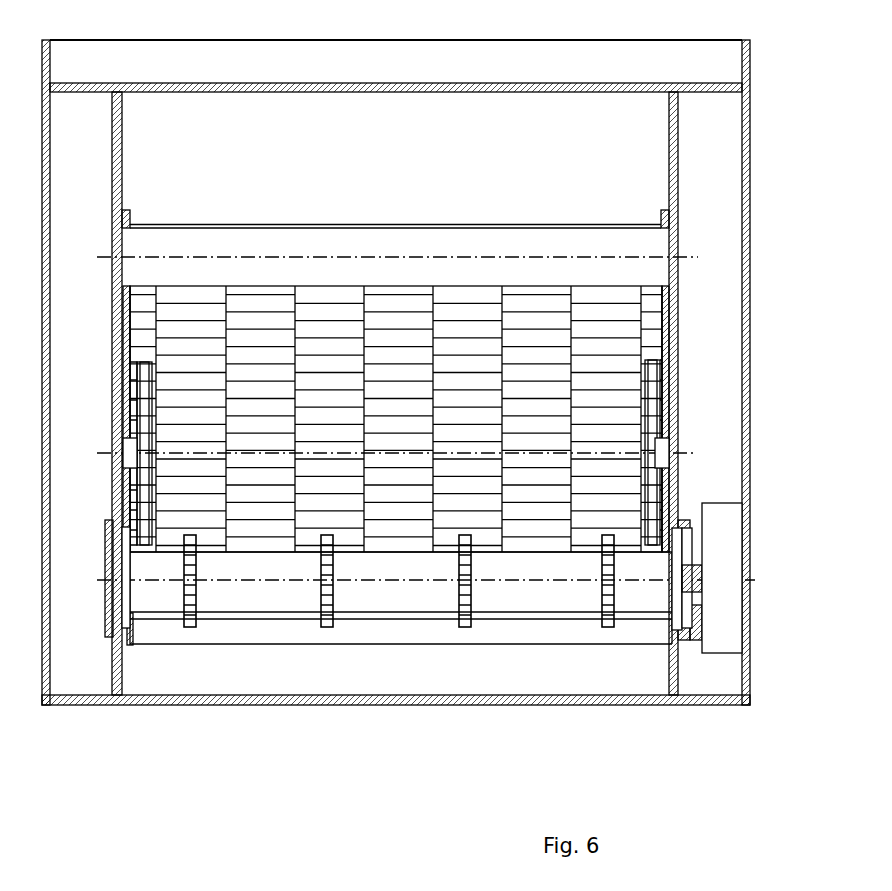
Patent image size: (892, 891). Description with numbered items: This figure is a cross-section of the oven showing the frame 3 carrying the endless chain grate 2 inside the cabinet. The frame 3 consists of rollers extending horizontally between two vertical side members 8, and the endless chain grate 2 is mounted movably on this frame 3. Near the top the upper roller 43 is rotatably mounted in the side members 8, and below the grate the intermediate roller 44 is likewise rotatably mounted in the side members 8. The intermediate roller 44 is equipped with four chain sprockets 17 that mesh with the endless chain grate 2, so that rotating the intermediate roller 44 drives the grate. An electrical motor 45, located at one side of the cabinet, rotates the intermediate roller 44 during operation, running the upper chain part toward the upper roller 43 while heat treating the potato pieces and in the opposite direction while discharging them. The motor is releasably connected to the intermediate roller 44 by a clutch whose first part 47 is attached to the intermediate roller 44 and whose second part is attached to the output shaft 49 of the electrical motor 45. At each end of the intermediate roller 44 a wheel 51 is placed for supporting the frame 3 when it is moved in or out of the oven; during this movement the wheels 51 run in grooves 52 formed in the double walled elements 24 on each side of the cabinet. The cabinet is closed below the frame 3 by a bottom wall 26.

The endless chain grate 2 is at (333, 313).
The frame 3 is at (563, 207).
The vertical side members 8 is at (112, 335).
The chain sprocket 17 is at (458, 627).
The double walled element 24 is at (63, 470).
The bottom wall 26 is at (345, 682).
The upper roller 43 is at (212, 243).
The intermediate roller 44 is at (258, 598).
The electrical motor 45 is at (737, 537).
The first part of the clutch 47 is at (690, 522).
The output shaft 49 is at (705, 590).
The wheel 51 is at (107, 633).
The grooves 52 is at (120, 594).